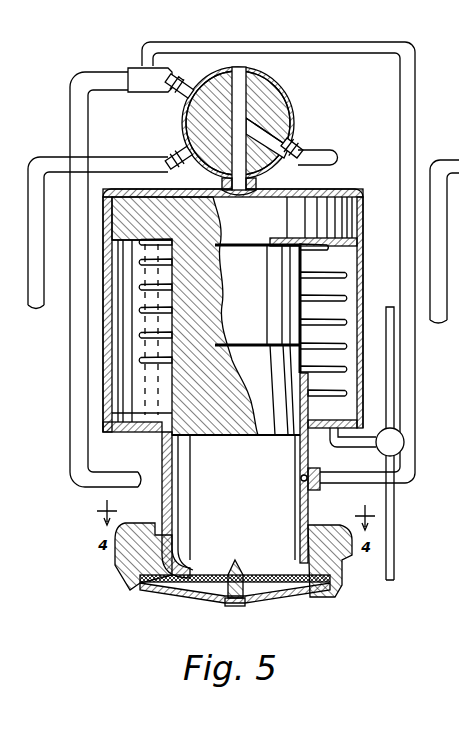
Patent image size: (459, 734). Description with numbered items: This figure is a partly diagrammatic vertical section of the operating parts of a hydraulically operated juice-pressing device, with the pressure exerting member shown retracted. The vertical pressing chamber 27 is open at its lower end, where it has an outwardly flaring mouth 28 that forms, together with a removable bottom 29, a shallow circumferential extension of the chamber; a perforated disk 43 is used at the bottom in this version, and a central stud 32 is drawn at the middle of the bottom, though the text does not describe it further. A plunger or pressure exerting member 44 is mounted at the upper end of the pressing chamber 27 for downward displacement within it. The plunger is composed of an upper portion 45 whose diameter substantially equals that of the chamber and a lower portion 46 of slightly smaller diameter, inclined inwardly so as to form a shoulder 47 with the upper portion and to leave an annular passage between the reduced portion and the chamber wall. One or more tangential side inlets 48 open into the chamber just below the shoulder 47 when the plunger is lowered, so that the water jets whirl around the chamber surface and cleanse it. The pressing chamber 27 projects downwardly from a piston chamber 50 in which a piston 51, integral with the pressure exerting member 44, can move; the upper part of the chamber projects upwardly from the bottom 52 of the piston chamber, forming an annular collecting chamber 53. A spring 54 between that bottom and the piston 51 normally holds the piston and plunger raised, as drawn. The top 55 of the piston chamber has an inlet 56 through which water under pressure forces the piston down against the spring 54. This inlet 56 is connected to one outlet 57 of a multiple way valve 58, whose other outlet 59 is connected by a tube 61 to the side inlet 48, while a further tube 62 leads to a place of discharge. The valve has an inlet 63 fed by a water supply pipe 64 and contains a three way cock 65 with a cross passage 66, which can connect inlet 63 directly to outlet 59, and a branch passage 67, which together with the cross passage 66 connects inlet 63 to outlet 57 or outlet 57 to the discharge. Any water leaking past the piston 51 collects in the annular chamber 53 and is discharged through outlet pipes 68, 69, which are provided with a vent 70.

The pressing chamber 27 is at (310, 508).
The outwardly flaring mouth 28 is at (300, 565).
The removable bottom 29 is at (337, 593).
The central stud 32 is at (236, 606).
The perforated disk 43 is at (198, 583).
The plunger or pressure exerting member 44 is at (252, 438).
The upper portion of plunger 45 is at (302, 258).
The lower portion of plunger 46 is at (267, 402).
The shoulder 47 is at (350, 388).
The side inlet 48 is at (190, 474).
The piston chamber 50 is at (340, 247).
The piston 51 is at (342, 206).
The bottom of the piston chamber 52 is at (233, 321).
The annular collecting chamber 53 is at (349, 411).
The spring 54 is at (362, 378).
The top of the piston chamber 55 is at (332, 191).
The inlet 56 is at (262, 191).
The outlet of the valve 57 is at (185, 164).
The multiple way valve 58 is at (278, 100).
The outlet of the valve 59 is at (190, 80).
The tube 61 is at (80, 432).
The tube 62 is at (35, 160).
The inlet of the valve 63 is at (300, 146).
The water supply pipe 64 is at (335, 152).
The three way cock 65 is at (268, 112).
The cross passage 66 is at (238, 88).
The branch passage 67 is at (252, 135).
The outlet pipe 68 is at (356, 446).
The outlet pipe 69 is at (395, 524).
The vent 70 is at (396, 382).